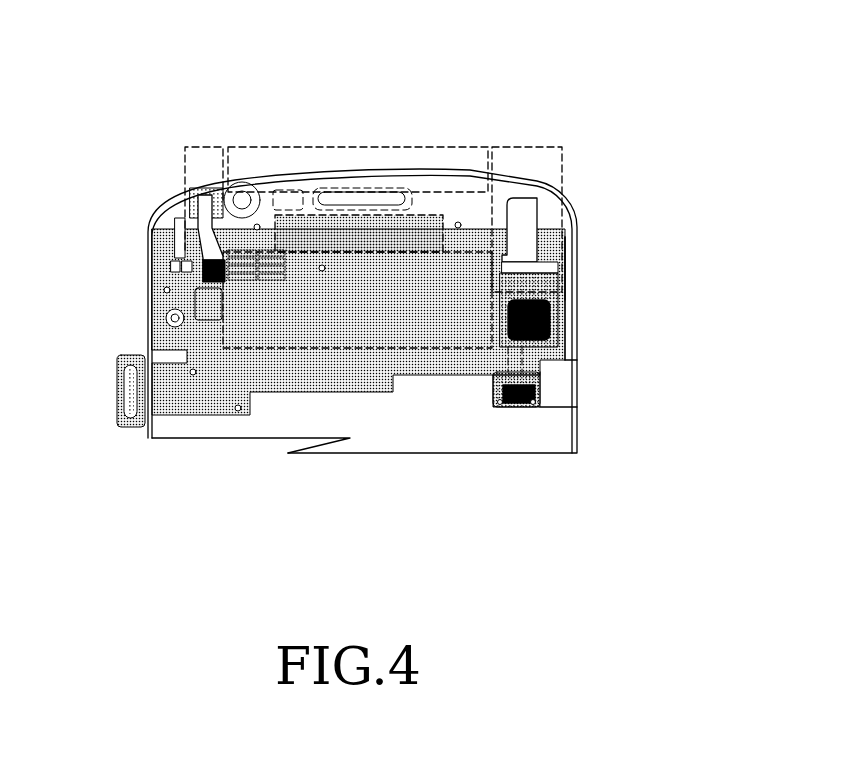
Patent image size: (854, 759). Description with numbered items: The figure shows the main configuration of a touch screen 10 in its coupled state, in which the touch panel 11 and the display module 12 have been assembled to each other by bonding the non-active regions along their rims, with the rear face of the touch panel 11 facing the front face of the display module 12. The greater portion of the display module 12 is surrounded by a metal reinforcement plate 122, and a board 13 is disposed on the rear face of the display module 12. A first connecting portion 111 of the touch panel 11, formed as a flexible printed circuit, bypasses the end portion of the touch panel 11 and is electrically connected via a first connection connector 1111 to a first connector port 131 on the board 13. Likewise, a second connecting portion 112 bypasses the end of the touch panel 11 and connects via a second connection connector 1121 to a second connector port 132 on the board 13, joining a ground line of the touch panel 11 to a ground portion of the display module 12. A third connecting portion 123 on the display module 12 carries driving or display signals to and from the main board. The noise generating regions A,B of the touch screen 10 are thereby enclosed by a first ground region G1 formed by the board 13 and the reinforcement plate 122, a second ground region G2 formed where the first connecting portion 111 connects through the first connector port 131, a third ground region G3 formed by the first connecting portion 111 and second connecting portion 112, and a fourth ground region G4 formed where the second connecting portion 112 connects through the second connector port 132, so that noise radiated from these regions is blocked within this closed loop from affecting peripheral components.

The touch screen 10 is at (177, 100).
The touch panel 11 is at (472, 177).
The display module 12 is at (145, 318).
The board 13 is at (463, 283).
The first connecting portion 111 is at (527, 227).
The second connecting portion 112 is at (198, 201).
The second connection connector 1121 is at (188, 266).
The reinforcement plate 122 is at (558, 407).
The third connecting portion 123 is at (128, 428).
The first connector port 131 is at (518, 407).
The second connector port 132 is at (213, 283).
The first connection connector 1111 is at (540, 378).
The first ground region G1 is at (360, 349).
The second ground region G2 is at (563, 245).
The third ground region G3 is at (325, 147).
The fourth ground region G4 is at (185, 172).
The noise generating regions A,B is at (437, 214).